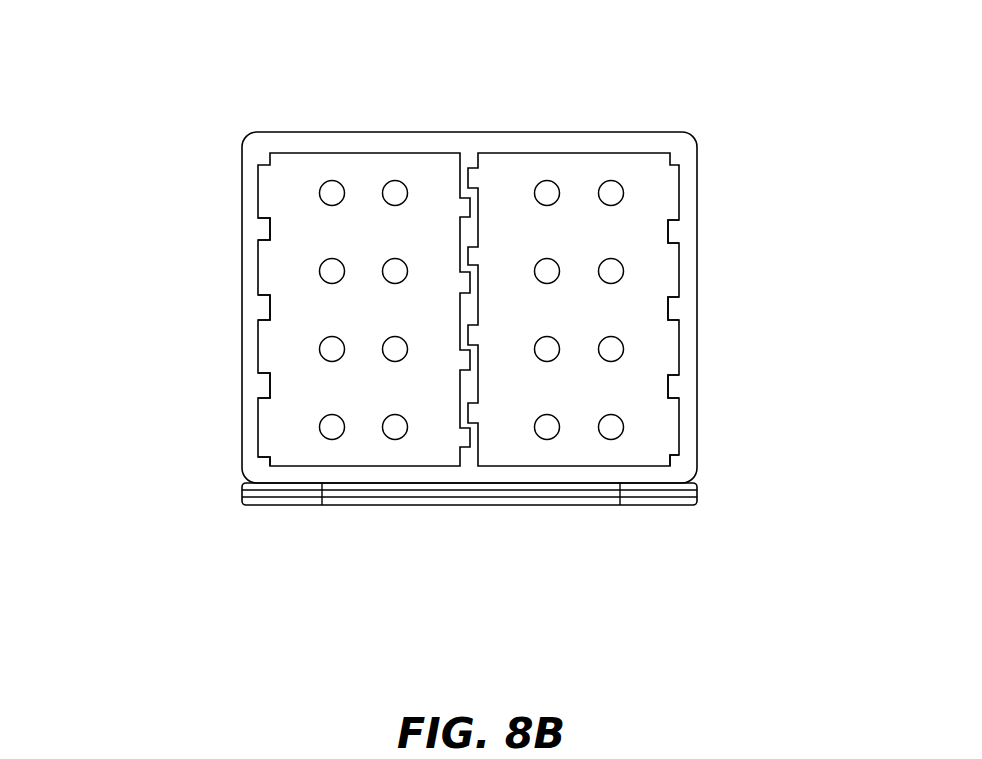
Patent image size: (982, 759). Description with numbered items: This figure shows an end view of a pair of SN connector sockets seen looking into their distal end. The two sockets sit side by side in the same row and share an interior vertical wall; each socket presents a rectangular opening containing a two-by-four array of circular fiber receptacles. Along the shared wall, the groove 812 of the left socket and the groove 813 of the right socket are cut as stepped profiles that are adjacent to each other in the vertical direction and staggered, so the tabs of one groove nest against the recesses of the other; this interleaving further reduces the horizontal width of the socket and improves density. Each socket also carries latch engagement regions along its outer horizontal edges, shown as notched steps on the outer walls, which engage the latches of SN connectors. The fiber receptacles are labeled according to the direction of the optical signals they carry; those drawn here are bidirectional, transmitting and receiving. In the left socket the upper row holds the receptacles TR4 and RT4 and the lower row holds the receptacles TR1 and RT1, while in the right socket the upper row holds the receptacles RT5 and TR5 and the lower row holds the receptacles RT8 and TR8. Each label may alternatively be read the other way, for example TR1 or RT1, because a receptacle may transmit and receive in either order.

The groove 812 is at (462, 208).
The groove 813 is at (476, 178).
The bidirectional fiber receptacle TR1 is at (320, 433).
The bidirectional fiber receptacle RT1 is at (385, 438).
The bidirectional fiber receptacle TR4 is at (318, 187).
The bidirectional fiber receptacle RT4 is at (384, 182).
The bidirectional fiber receptacle TR5 is at (624, 190).
The bidirectional fiber receptacle RT5 is at (559, 182).
The bidirectional fiber receptacle TR8 is at (623, 432).
The bidirectional fiber receptacle RT8 is at (558, 437).